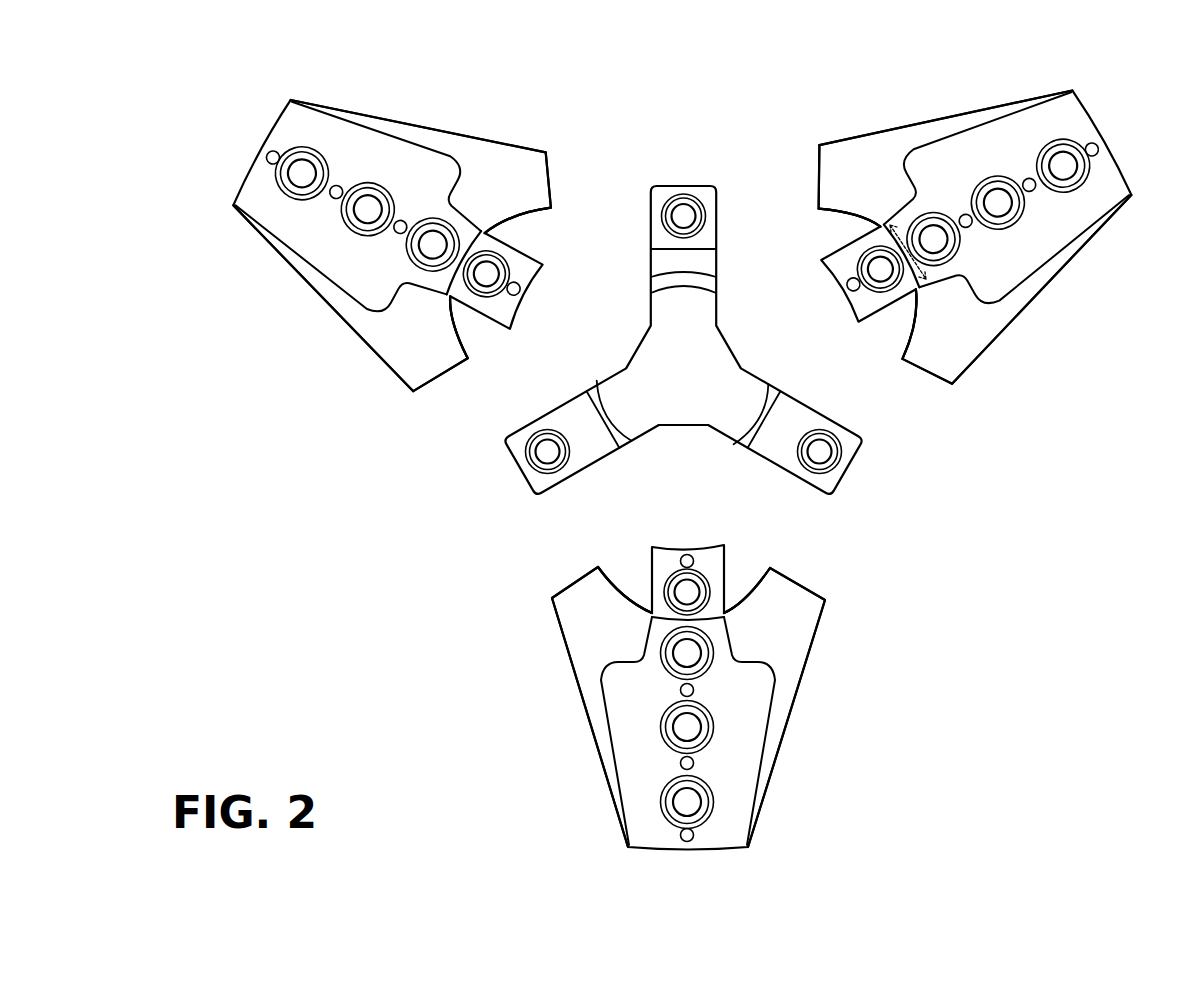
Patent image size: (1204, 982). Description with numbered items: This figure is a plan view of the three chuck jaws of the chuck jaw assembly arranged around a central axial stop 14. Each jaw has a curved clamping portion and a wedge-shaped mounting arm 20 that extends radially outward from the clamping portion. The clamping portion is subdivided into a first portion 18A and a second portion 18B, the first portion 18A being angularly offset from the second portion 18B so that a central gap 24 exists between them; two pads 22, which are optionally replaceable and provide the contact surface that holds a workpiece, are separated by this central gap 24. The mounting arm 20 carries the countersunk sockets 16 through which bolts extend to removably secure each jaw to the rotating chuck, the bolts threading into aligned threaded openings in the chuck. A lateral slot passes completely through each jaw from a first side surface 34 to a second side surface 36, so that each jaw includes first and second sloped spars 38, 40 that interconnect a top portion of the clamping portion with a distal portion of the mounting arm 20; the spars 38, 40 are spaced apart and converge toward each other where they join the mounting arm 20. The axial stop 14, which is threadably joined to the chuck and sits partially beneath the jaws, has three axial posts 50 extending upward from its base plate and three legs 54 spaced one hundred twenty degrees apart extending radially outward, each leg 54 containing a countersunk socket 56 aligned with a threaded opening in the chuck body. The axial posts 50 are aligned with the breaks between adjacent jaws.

The axial stop 14 is at (689, 170).
The countersunk sockets 16 is at (673, 793).
The first portion 18A is at (771, 611).
The second portion 18B is at (603, 612).
The mounting arm 20 is at (712, 843).
The pads 22 is at (620, 587).
The central gap 24 is at (882, 327).
The first side surface 34 is at (553, 637).
The second side surface 36 is at (818, 648).
The first sloped spar 38 is at (598, 718).
The second sloped spar 40 is at (777, 737).
The axial posts 50 is at (687, 287).
The legs 54 is at (641, 198).
The countersunk socket 56 is at (700, 212).